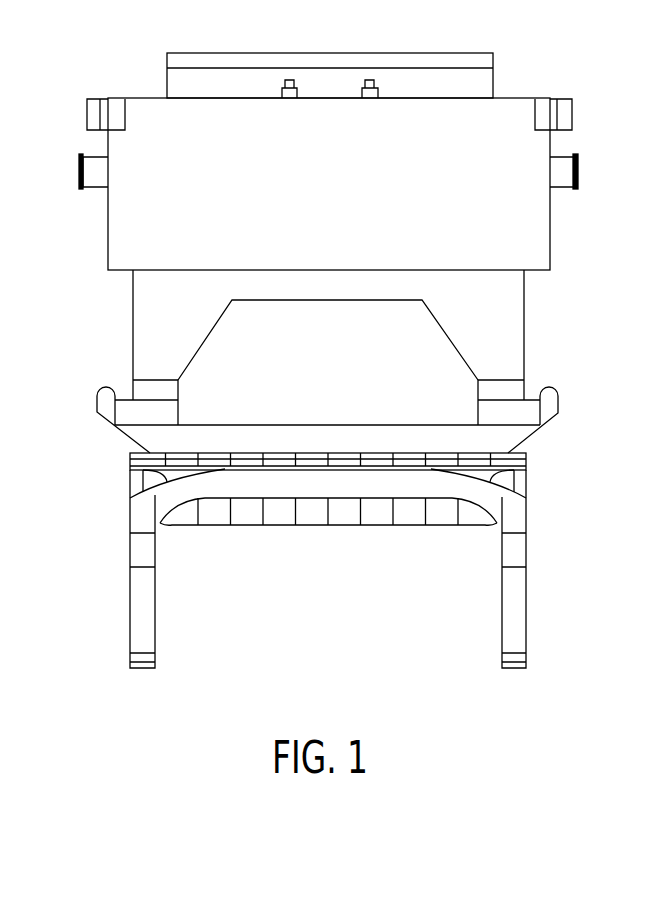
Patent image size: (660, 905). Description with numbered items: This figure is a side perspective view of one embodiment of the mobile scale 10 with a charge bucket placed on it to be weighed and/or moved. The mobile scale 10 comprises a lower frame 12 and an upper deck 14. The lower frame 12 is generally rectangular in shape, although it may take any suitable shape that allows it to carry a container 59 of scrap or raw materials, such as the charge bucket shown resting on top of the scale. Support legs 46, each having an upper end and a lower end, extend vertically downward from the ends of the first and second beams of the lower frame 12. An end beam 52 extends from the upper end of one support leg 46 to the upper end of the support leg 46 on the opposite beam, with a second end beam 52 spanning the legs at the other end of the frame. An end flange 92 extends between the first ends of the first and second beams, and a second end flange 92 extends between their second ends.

The mobile scale 10 is at (330, 360).
The lower frame 12 is at (515, 507).
The upper deck 14 is at (523, 461).
The support leg 46 is at (135, 608).
The end beam 52 is at (160, 500).
The container 59 is at (113, 222).
The end flange 92 is at (283, 513).